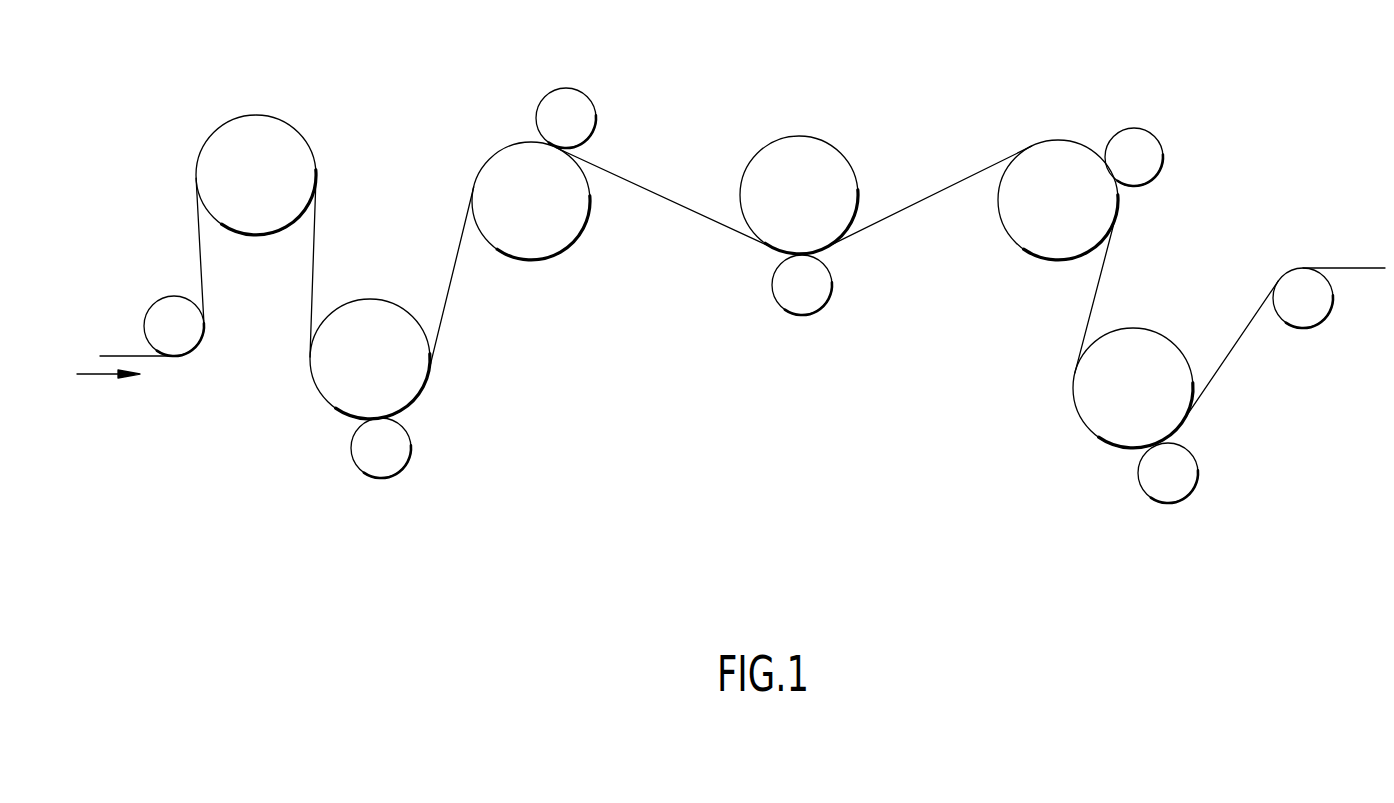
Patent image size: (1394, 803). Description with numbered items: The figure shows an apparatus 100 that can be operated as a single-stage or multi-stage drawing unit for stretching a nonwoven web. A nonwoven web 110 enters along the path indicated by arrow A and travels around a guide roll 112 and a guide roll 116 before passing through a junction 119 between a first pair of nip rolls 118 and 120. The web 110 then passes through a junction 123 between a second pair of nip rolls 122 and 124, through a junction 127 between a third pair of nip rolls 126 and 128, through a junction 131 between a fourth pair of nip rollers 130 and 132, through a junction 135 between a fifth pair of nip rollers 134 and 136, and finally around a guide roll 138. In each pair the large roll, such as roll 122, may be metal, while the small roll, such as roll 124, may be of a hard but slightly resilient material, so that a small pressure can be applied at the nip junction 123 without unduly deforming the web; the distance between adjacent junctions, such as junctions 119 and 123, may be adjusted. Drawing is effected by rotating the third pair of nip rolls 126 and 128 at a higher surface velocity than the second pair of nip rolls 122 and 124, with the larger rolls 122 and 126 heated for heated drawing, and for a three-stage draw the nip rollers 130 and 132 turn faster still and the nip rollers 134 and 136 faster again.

The apparatus 100 is at (750, 428).
The nonwoven web 110 is at (198, 230).
The guide roll 112 is at (175, 318).
The guide roll 116 is at (265, 222).
The nip roll 118 is at (362, 317).
The junction 119 is at (375, 420).
The nip roll 120 is at (385, 462).
The nip roll 122 is at (538, 248).
The nip junction 123 is at (557, 148).
The nip roll 124 is at (568, 105).
The nip roll 126 is at (815, 155).
The nip junction 127 is at (798, 255).
The nip roll 128 is at (807, 305).
The nip roller 130 is at (1015, 222).
The junction 131 is at (1107, 172).
The nip roller 132 is at (1143, 145).
The nip roller 134 is at (1130, 345).
The junction 135 is at (1157, 445).
The nip roller 136 is at (1165, 487).
The guide roll 138 is at (1308, 303).